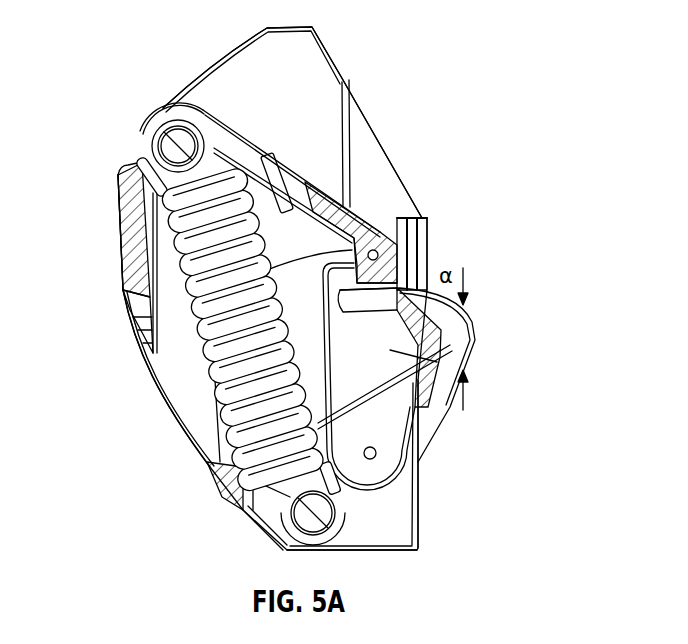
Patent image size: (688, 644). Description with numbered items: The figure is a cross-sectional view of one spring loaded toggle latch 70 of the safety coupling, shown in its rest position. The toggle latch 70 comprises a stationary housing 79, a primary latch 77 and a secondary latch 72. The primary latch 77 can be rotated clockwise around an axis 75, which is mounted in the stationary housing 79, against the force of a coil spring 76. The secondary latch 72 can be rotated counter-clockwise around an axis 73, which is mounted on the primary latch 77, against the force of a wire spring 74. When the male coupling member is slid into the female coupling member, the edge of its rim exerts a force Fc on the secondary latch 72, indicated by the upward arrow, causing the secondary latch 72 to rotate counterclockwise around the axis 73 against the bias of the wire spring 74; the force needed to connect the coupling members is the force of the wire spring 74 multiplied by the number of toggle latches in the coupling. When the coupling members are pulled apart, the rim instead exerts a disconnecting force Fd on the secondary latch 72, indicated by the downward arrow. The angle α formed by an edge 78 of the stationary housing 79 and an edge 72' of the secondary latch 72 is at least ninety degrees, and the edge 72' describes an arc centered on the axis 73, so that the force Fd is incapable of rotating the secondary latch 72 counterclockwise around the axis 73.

The toggle latch 70 is at (116, 70).
The stationary housing 79 is at (233, 72).
The primary latch 77 is at (265, 198).
The axis 75 is at (381, 252).
The edge 78 is at (428, 266).
The secondary latch 72 is at (425, 363).
The edge 72' is at (439, 375).
The wire spring 74 is at (378, 386).
The axis 73 is at (378, 456).
The coil spring 76 is at (212, 450).
The disconnecting force Fd is at (476, 286).
The connecting force Fc is at (474, 391).